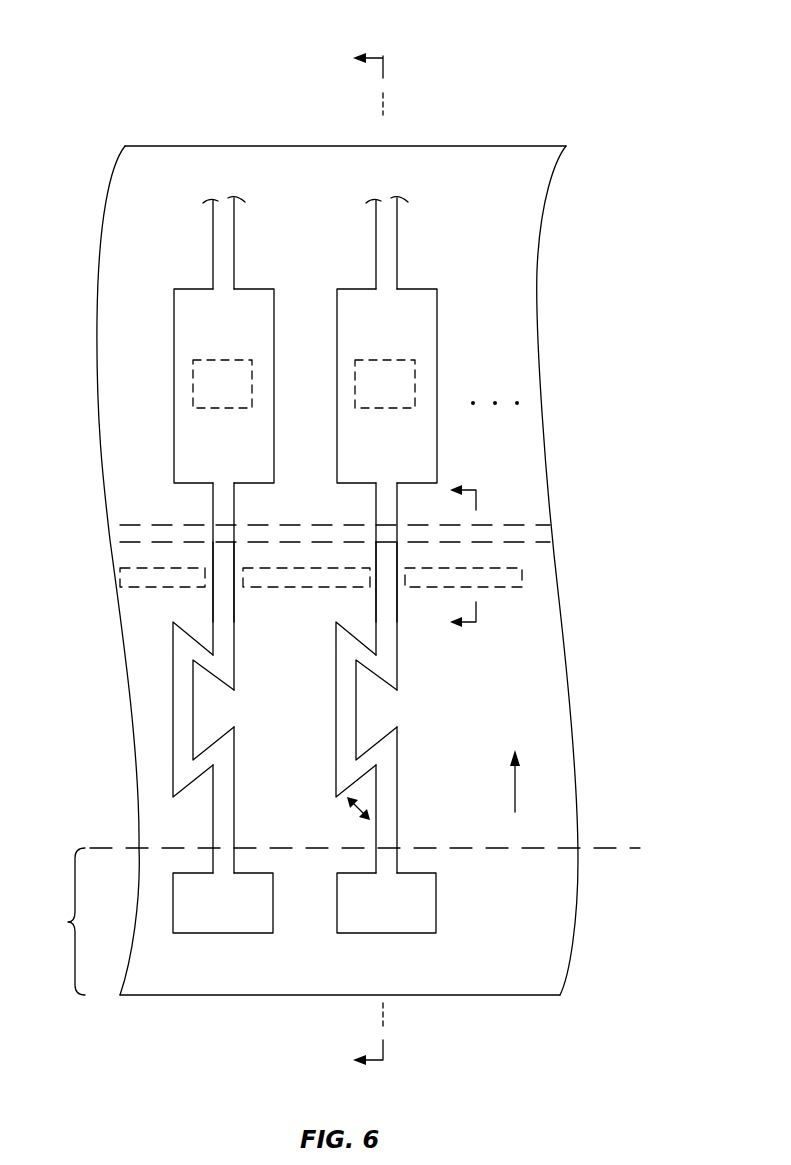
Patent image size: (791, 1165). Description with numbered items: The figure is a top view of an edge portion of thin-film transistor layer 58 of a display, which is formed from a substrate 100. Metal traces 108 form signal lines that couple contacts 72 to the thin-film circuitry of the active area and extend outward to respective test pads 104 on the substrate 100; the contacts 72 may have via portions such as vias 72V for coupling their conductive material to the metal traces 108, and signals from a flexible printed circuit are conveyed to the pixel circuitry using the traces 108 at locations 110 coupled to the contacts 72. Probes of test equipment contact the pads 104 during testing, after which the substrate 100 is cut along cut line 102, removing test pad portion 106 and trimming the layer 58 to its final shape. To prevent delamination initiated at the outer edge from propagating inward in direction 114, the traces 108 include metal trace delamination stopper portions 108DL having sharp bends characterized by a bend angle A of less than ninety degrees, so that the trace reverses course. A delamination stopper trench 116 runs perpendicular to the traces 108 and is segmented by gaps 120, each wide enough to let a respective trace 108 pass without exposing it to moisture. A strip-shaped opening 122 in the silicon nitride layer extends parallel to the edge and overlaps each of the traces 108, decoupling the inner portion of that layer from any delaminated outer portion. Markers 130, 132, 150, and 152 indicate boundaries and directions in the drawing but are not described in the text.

The thin-film transistor layer 58 is at (647, 260).
The contacts 72 is at (352, 304).
The vias 72V is at (193, 385).
The substrate 100 is at (565, 636).
The cut line 102 is at (628, 847).
The test pads 104 is at (257, 903).
The test pad portion 106 is at (58, 921).
The metal traces 108 is at (222, 240).
The metal trace delamination stopper portions 108DL is at (136, 683).
The locations 110 is at (176, 206).
The direction 114 is at (517, 787).
The delamination stopper trench 116 is at (162, 590).
The gaps 120 is at (247, 605).
The opening 122 is at (512, 525).
The fold line marker 130 is at (385, 72).
The fold direction arrow 132 is at (375, 56).
The bend line marker 150 is at (477, 497).
The bend direction arrow 152 is at (467, 487).
The bend angle A is at (353, 817).